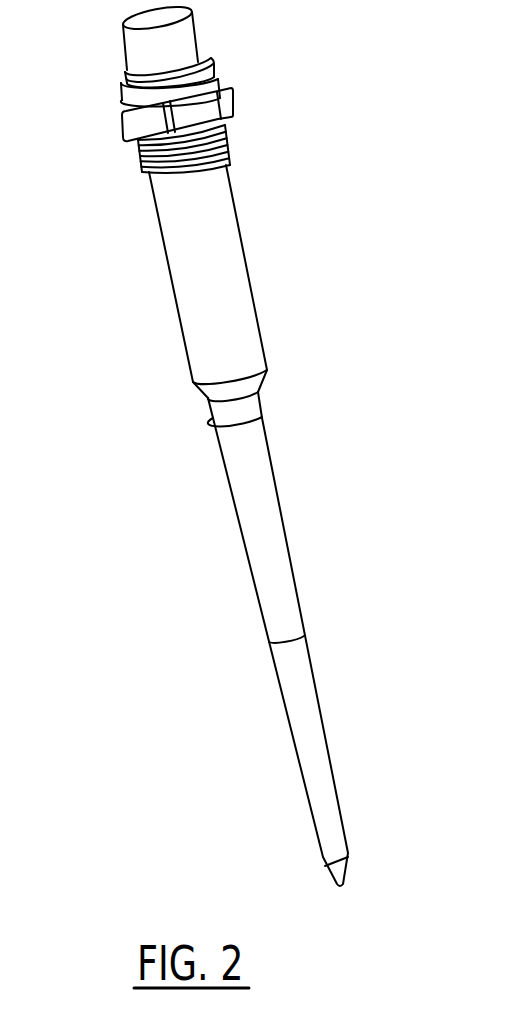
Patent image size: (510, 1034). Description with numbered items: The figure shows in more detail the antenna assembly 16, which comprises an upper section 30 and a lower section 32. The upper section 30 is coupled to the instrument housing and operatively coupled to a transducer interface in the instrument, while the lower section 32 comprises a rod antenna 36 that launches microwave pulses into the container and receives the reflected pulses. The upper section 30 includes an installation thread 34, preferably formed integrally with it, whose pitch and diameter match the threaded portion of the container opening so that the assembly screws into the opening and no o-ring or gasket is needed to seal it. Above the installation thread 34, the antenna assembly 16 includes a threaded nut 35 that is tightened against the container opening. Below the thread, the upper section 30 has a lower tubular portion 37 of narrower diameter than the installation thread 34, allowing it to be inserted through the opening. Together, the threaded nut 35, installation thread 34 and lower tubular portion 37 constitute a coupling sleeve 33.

The antenna assembly 16 is at (356, 83).
The upper section 30 is at (118, 300).
The lower section 32 is at (350, 565).
The coupling sleeve 33 is at (113, 105).
The installation thread 34 is at (229, 147).
The threaded nut 35 is at (236, 95).
The rod antenna 36 is at (269, 609).
The lower tubular portion 37 is at (233, 227).